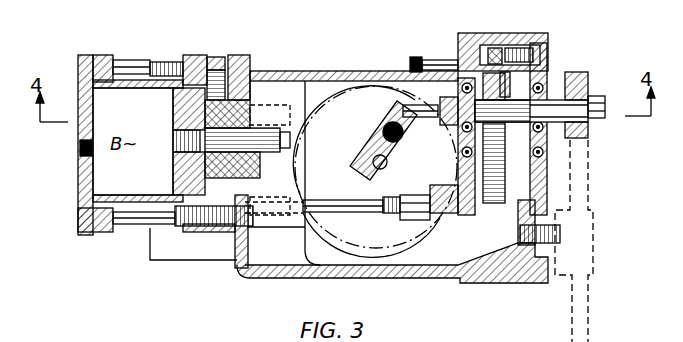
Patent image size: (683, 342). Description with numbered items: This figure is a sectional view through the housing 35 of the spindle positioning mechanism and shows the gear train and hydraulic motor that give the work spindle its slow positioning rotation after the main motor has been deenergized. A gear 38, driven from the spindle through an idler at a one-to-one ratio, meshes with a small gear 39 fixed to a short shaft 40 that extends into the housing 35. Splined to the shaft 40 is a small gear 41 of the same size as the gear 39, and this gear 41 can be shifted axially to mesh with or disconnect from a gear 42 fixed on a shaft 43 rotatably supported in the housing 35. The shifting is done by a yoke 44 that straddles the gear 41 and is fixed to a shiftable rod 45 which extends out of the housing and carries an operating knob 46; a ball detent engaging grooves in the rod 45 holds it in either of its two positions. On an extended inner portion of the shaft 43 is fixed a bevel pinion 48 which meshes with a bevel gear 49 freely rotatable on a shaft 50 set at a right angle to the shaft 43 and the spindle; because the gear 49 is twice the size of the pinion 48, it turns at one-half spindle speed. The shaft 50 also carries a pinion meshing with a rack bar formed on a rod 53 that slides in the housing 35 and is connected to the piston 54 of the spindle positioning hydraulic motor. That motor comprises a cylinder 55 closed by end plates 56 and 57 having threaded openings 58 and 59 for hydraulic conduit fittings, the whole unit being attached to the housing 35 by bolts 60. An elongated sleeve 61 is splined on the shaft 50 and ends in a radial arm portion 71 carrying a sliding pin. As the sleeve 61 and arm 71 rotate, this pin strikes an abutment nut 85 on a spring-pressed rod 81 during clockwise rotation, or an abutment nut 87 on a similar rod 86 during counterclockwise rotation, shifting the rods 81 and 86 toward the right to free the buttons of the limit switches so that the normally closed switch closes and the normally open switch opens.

The housing 35 is at (410, 278).
The gear 38 is at (582, 192).
The small gear 39 is at (589, 130).
The short shaft 40 is at (558, 100).
The small gear 41 is at (528, 129).
The gear 42 is at (500, 205).
The shaft 43 is at (503, 195).
The yoke 44 is at (508, 62).
The shiftable rod 45 is at (540, 70).
The operating knob 46 is at (418, 57).
The bevel pinion 48 is at (445, 212).
The bevel gear 49 is at (405, 240).
The shaft 50 is at (360, 158).
The rod 53 is at (266, 154).
The piston 54 is at (173, 178).
The cylinder 55 is at (118, 88).
The end plate 56 is at (78, 180).
The end plate 57 is at (193, 230).
The threaded opening 58 is at (78, 147).
The threaded opening 59 is at (216, 57).
The bolts 60 is at (135, 228).
The elongated sleeve 61 is at (372, 170).
The radial arm portion 71 is at (390, 122).
The rod 81 is at (338, 108).
The abutment nut 85 is at (405, 84).
The rod 86 is at (322, 222).
The abutment nut 87 is at (400, 218).